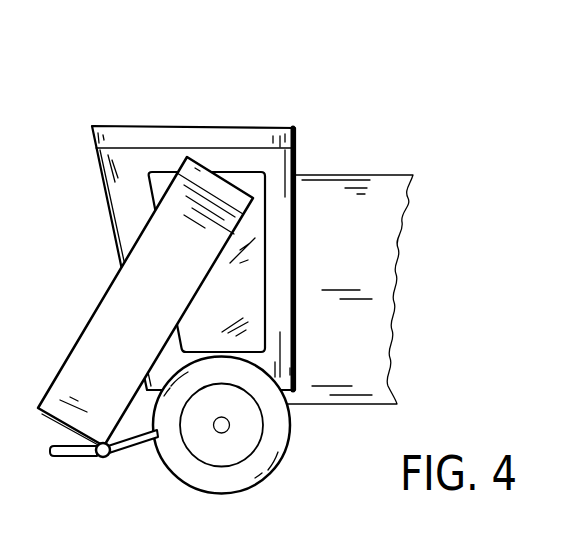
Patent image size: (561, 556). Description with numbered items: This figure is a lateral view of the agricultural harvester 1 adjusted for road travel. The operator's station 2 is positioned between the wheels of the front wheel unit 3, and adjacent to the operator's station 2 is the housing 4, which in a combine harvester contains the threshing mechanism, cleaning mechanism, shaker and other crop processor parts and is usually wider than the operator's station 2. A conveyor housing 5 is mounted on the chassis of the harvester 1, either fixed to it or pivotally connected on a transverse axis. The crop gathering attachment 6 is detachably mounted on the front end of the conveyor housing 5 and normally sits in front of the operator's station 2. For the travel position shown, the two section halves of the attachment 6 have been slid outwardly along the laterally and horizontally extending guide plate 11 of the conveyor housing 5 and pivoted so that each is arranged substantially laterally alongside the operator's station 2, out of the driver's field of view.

The agricultural harvester 1 is at (352, 115).
The operator's station 2 is at (197, 128).
The front wheel unit 3 is at (288, 450).
The housing 4 is at (377, 250).
The conveyor housing 5 is at (142, 430).
The crop gathering attachment 6 is at (113, 316).
The guide plate 11 is at (70, 458).